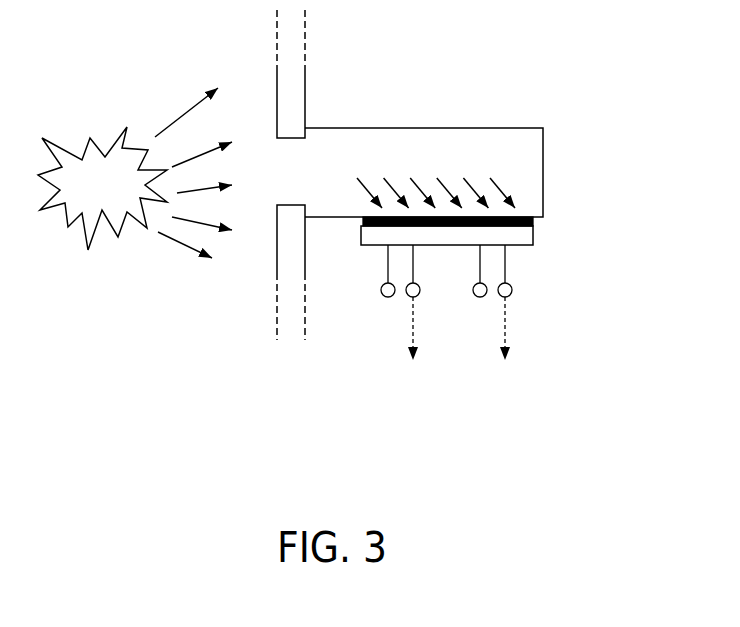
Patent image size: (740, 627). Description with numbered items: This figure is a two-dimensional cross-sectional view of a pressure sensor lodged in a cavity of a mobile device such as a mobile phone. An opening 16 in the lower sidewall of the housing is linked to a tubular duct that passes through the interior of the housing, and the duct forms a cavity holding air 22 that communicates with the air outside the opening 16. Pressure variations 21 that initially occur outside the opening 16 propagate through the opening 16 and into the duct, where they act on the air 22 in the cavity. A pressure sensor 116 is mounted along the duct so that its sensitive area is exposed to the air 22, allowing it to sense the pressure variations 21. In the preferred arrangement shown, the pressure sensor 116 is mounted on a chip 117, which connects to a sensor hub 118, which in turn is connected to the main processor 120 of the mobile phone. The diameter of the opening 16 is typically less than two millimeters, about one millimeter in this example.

The pressure variations 21 is at (118, 197).
The opening 16 is at (312, 152).
The air 22 is at (443, 164).
The pressure sensor 116 is at (358, 222).
The chip 117 is at (533, 233).
The sensor hub 118 is at (446, 322).
The main processor 120 is at (461, 348).